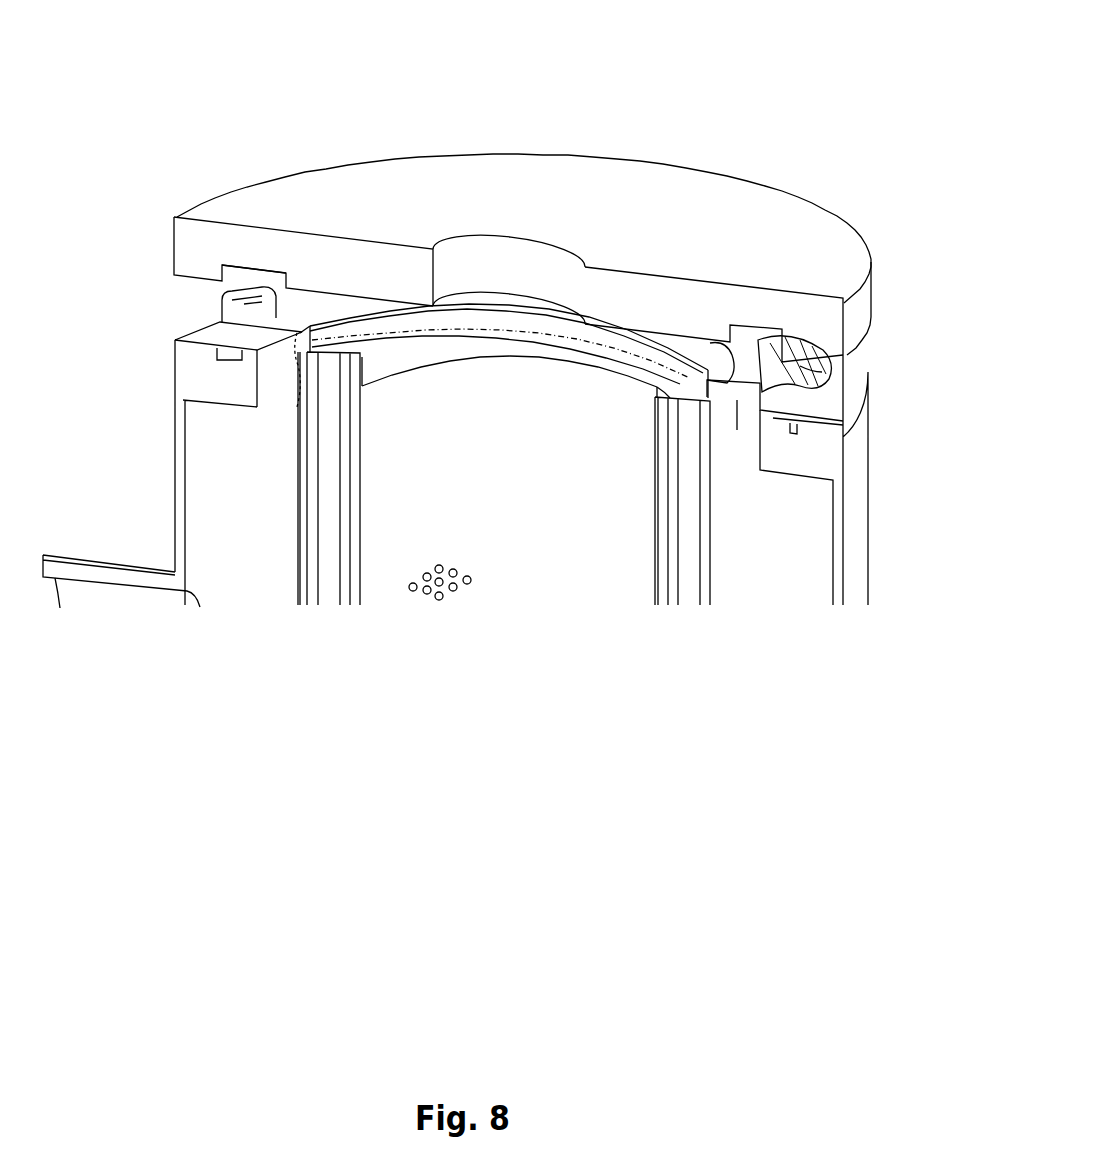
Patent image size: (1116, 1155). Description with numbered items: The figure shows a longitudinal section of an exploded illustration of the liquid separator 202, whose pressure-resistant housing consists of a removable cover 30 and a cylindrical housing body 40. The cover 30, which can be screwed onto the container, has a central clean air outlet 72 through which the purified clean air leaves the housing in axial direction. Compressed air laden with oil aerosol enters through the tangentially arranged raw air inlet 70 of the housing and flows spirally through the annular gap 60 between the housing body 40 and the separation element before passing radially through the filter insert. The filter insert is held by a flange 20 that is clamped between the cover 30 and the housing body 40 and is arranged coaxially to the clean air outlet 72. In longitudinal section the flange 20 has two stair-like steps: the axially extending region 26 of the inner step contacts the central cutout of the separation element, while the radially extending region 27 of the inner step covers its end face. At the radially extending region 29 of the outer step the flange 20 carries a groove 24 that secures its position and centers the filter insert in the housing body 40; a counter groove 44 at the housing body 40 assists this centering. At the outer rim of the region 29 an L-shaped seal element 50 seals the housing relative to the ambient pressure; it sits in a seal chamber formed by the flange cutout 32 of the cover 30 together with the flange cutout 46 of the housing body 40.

The liquid separator 202 is at (733, 103).
The cover 30 is at (522, 258).
The clean air outlet 72 is at (509, 279).
The flange cutout 32 is at (262, 282).
The flange 20 is at (504, 454).
The axially extending region 26 is at (510, 346).
The radially extending region 29 is at (307, 313).
The radially extending region 27 is at (681, 358).
The groove 24 is at (245, 310).
The annular gap 60 is at (238, 463).
The raw air inlet 70 is at (121, 586).
The housing body 40 is at (860, 568).
The counter groove 44 is at (768, 436).
The flange cutout 46 is at (790, 407).
The seal element 50 is at (820, 372).